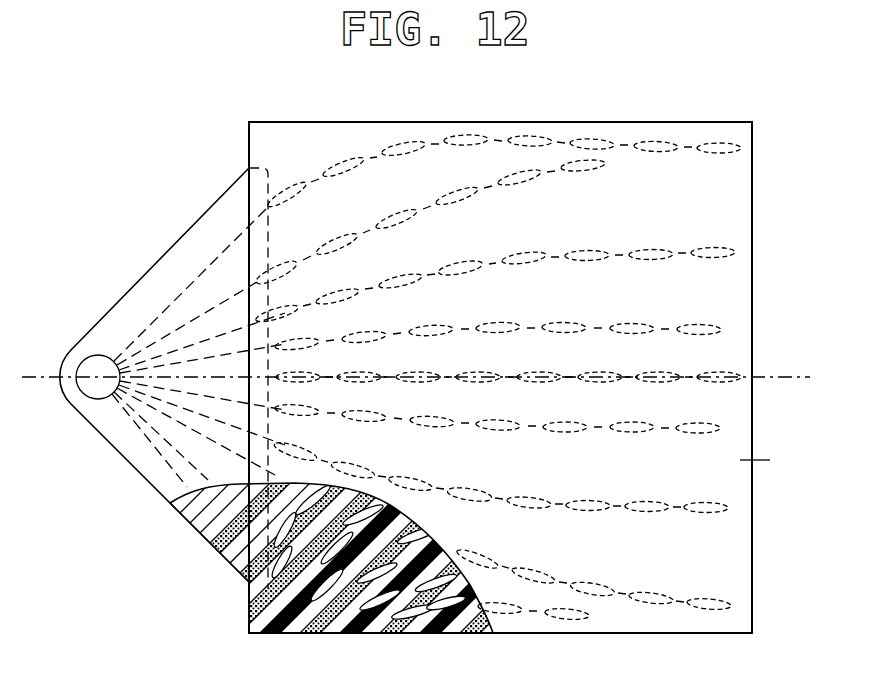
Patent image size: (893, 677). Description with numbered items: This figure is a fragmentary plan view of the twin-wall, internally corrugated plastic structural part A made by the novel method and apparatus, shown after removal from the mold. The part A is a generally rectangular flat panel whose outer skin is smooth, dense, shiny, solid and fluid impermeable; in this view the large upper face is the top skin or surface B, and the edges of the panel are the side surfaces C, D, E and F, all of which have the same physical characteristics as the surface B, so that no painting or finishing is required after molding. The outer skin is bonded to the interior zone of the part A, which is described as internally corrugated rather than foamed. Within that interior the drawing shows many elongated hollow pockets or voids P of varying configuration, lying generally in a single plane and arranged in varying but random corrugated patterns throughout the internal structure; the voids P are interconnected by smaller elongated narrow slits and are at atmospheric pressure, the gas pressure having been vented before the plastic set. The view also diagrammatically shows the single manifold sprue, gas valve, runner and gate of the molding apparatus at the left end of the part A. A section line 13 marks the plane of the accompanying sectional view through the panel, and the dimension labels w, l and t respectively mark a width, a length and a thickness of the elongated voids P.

The plastic structural part A is at (762, 575).
The top skin or surface B is at (766, 462).
The side surface C is at (607, 121).
The side surface D is at (249, 614).
The side surface E is at (362, 634).
The side surface F is at (757, 197).
The hollow pockets or voids P is at (723, 147).
The section line 13- 13 is at (43, 378).
The strand width dimension w is at (574, 135).
The strand length dimension l is at (605, 232).
The strand thickness dimension t is at (568, 410).